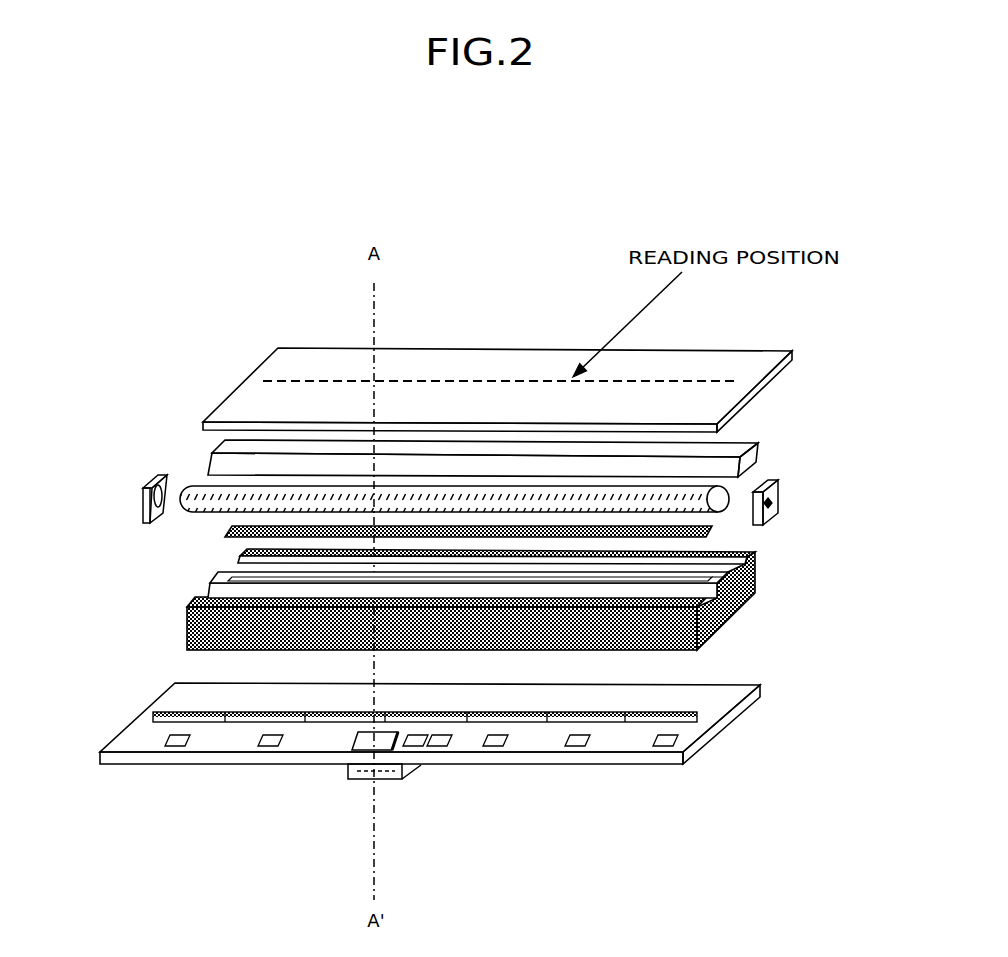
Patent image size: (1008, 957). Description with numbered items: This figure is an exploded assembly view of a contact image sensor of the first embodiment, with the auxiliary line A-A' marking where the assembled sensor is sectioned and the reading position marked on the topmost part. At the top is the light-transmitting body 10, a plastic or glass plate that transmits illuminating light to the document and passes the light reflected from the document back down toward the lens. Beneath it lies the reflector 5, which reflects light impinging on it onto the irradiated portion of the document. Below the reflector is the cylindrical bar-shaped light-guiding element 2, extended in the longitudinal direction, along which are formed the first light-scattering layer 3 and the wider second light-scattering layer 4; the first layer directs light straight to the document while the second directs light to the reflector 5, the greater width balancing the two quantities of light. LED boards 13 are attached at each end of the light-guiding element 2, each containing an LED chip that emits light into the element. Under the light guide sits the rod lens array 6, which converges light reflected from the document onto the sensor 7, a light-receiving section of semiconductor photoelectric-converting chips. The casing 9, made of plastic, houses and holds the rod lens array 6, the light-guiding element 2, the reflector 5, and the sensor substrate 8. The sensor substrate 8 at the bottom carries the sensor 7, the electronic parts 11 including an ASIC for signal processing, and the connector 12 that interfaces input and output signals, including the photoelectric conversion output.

The light-guiding element 2 is at (729, 497).
The first light-scattering layer 3 is at (215, 510).
The second light-scattering layer 4 is at (188, 485).
The reflector 5 is at (750, 460).
The rod lens array 6 is at (708, 532).
The sensor 7 is at (523, 725).
The sensor substrate 8 is at (200, 753).
The casing 9 is at (185, 625).
The light-transmitting body 10 is at (455, 347).
The electronic parts 11 is at (353, 740).
The connector 12 is at (403, 780).
The LED board 13 is at (142, 517).